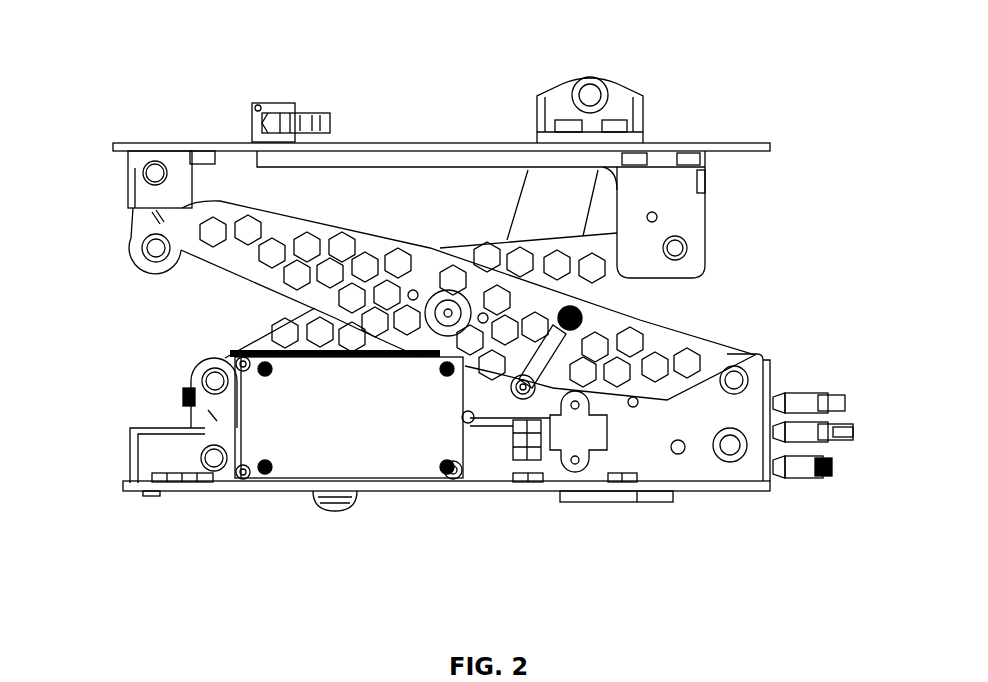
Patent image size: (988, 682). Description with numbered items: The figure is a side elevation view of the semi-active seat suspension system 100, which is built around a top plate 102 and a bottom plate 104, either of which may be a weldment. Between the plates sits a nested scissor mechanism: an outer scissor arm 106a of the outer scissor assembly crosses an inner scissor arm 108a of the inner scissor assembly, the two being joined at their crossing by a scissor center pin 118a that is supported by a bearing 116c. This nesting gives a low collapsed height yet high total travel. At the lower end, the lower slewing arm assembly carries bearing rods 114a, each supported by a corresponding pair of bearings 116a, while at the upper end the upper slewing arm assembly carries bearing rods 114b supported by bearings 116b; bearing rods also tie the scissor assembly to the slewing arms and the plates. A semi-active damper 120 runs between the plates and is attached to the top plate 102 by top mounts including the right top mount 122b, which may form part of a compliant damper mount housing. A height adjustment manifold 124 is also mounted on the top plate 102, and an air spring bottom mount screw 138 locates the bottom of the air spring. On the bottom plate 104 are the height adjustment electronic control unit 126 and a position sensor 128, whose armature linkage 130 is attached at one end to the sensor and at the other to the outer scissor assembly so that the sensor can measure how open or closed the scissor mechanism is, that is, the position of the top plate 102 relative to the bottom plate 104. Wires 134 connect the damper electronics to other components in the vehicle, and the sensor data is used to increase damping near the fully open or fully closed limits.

The semi-active seat suspension system 100 is at (146, 55).
The top plate 102 is at (223, 142).
The bottom plate 104 is at (707, 490).
The outer scissor arm 106a is at (598, 326).
The inner scissor arm 108a is at (265, 335).
The bearing rods 114a is at (205, 378).
The bearing rods 114b is at (142, 248).
The bearings 116a is at (207, 457).
The bearings 116b is at (141, 240).
The bearing 116c is at (455, 322).
The scissor center pin 118a is at (445, 322).
The semi-active damper 120 is at (528, 200).
The right top mount 122b is at (645, 110).
The height adjustment manifold 124 is at (282, 103).
The height adjustment electronic control unit (ECU) 126 is at (323, 462).
The position sensor 128 is at (575, 462).
The position sensor armature linkage 130 is at (542, 352).
The wires 134 is at (849, 460).
The air spring bottom mount screw 138 is at (334, 513).